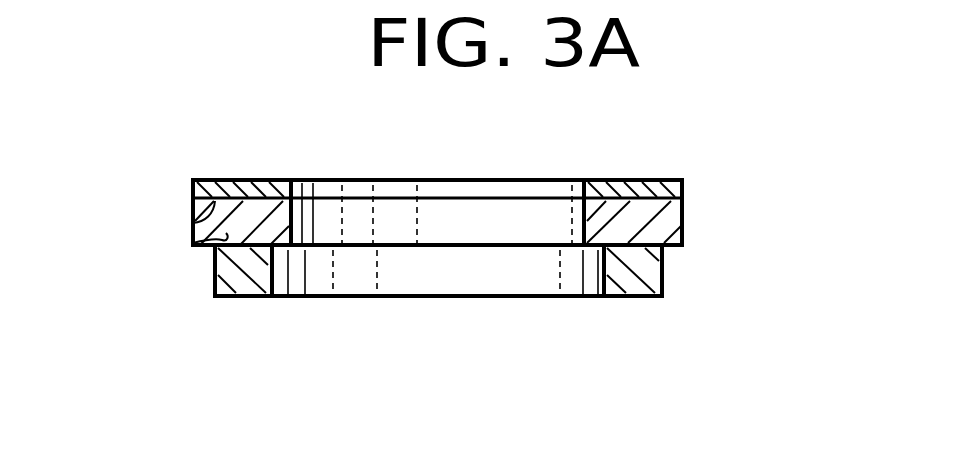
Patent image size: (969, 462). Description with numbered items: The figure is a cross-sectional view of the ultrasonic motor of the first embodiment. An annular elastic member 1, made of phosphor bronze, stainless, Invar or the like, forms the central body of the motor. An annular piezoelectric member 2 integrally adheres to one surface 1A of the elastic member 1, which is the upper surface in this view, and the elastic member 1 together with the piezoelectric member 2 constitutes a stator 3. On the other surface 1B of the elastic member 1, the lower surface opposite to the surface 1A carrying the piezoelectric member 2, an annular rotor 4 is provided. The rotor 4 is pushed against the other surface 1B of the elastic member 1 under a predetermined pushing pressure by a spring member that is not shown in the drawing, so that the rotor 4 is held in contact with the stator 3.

The elastic member 1 is at (682, 227).
The one surface 1A is at (193, 223).
The other surface 1B is at (193, 243).
The piezoelectric member 2 is at (682, 185).
The stator 3 is at (714, 153).
The rotor 4 is at (662, 277).